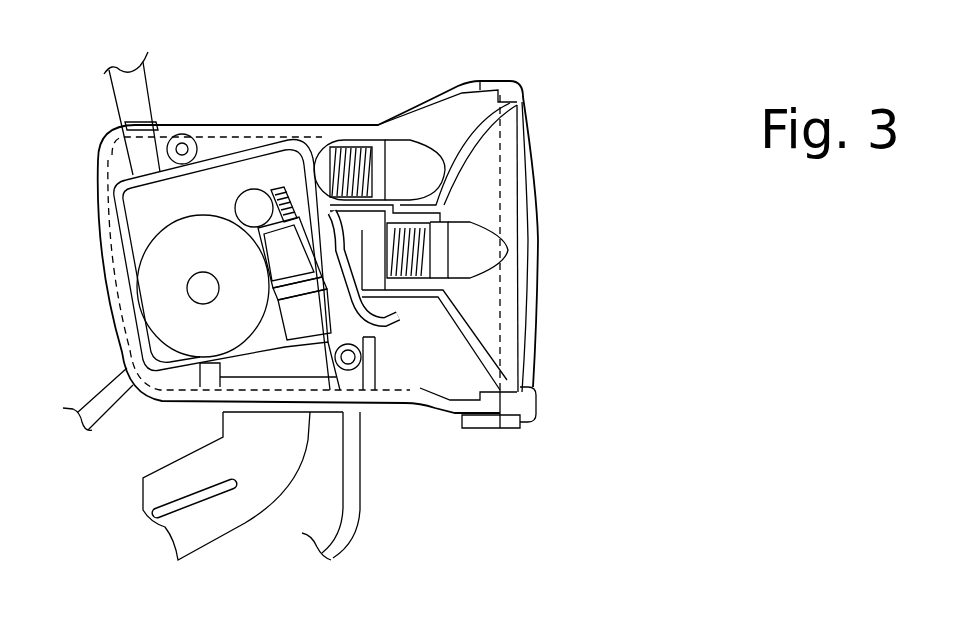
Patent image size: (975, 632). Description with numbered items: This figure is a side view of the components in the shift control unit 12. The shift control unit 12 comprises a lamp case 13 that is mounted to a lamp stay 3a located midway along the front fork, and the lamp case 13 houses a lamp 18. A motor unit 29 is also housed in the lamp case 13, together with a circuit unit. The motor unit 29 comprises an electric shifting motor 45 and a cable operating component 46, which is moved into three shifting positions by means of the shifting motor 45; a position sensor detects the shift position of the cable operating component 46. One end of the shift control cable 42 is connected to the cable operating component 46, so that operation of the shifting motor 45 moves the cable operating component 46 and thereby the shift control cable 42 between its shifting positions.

The shift control unit 12 is at (383, 82).
The lamp case 13 is at (302, 122).
The lamp 18 is at (470, 235).
The shift control cable 42 is at (132, 88).
The electric shifting motor 45 is at (336, 385).
The cable operating component 46 is at (185, 318).
The motor unit 29 is at (188, 404).
The lamp stay 3a is at (240, 517).